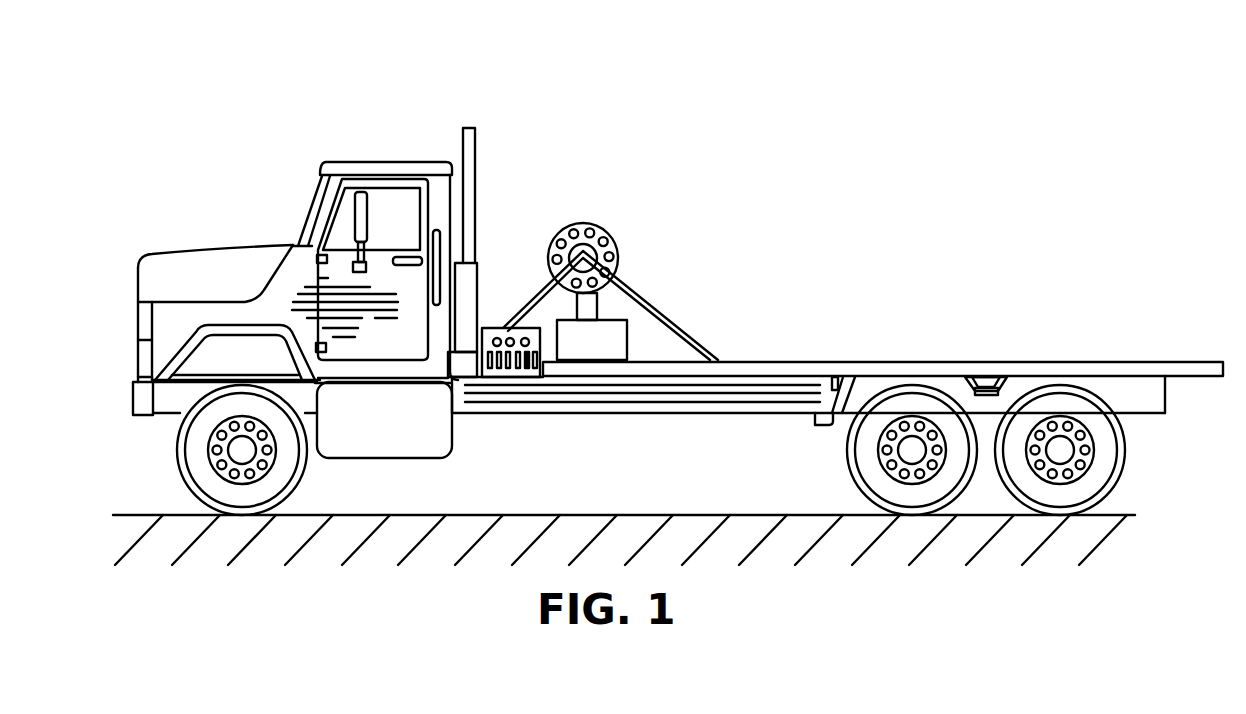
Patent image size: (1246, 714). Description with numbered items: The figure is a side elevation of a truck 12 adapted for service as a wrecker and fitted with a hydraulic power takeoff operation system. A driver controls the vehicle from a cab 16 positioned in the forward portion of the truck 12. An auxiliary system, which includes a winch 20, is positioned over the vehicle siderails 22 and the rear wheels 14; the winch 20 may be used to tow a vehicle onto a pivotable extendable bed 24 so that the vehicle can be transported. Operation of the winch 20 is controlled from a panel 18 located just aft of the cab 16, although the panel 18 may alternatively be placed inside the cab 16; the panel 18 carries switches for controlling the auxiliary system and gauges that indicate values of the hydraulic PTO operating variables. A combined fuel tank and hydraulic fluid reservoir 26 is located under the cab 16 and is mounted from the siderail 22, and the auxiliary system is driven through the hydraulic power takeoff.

The truck 12 is at (655, 113).
The rear wheels 14 is at (1126, 437).
The cab 16 is at (388, 162).
The panel 18 is at (498, 328).
The winch 20 is at (608, 237).
The siderails 22 is at (755, 377).
The pivotable extendable bed 24 is at (1035, 360).
The fuel tank 26 is at (430, 439).